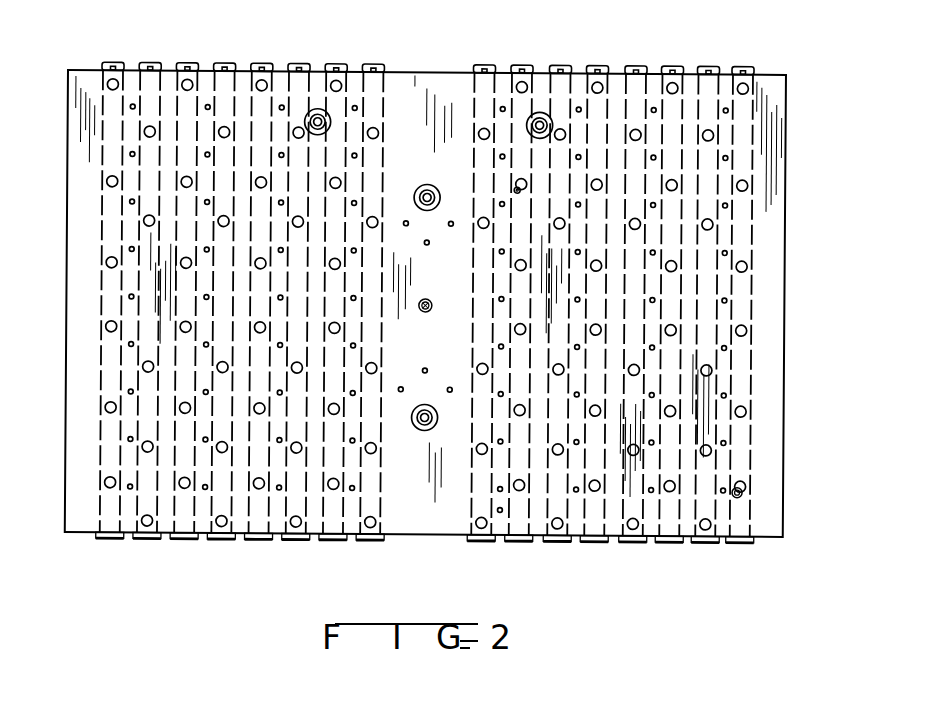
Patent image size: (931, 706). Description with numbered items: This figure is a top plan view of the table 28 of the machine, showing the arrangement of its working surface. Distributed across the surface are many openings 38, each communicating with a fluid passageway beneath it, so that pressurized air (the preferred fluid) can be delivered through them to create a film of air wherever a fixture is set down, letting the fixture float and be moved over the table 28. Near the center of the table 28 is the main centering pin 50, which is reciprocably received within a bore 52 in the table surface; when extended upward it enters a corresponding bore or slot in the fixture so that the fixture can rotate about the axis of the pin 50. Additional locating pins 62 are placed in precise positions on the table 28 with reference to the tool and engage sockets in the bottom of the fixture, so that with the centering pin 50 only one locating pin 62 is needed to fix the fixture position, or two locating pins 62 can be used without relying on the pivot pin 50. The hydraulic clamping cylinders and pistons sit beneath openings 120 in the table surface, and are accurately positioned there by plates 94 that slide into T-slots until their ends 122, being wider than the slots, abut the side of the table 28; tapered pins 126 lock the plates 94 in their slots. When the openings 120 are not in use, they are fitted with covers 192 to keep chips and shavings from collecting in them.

The table 28 is at (786, 354).
The opening 38 is at (131, 155).
The main centering pin 50 is at (427, 296).
The bore 52 is at (427, 310).
The locating pin 62 is at (318, 107).
The plate 94 is at (113, 62).
The opening 120 is at (515, 186).
The end 122 is at (150, 540).
The tapered pin 126 is at (188, 62).
The cover 192 is at (708, 130).